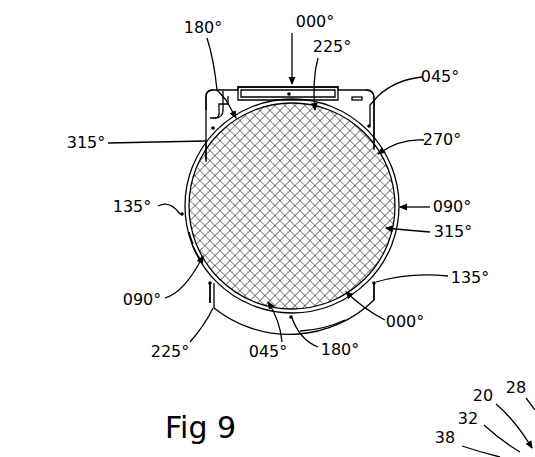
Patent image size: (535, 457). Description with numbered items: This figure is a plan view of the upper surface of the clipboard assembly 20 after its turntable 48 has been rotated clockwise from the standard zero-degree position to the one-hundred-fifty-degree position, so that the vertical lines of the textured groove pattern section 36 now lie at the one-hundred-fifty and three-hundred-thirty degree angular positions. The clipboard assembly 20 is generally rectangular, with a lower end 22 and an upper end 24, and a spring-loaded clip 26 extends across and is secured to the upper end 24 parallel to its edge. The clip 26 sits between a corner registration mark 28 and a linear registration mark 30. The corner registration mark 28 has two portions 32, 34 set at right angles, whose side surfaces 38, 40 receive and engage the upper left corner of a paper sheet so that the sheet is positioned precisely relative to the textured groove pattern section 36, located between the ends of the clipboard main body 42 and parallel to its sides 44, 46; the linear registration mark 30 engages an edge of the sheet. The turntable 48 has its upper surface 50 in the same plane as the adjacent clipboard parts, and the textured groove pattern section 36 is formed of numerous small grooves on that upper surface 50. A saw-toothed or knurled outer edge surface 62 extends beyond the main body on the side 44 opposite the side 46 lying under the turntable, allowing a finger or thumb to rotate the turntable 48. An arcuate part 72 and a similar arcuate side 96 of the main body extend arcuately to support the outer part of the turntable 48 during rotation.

The clipboard assembly 20 is at (214, 106).
The lower end 22 is at (330, 320).
The upper end 24 is at (224, 92).
The spring-loaded clip 26 is at (358, 90).
The corner registration mark 28 is at (200, 92).
The linear registration mark 30 is at (374, 94).
The registration mark portion 32 is at (217, 118).
The registration mark portion 34 is at (210, 134).
The textured groove pattern section 36 is at (196, 172).
The side surface 38 is at (213, 128).
The side surface 40 is at (206, 145).
The clipboard main body 42 is at (376, 124).
The side of clipboard main body 44 is at (206, 294).
The side of clipboard main body 46 is at (380, 302).
The turntable 48 is at (190, 236).
The upper surface of turntable 50 is at (196, 263).
The knurled outer edge surface 62 is at (195, 262).
The arcuate part of clipboard main body 72 is at (396, 238).
The arcuate side 96 is at (400, 188).